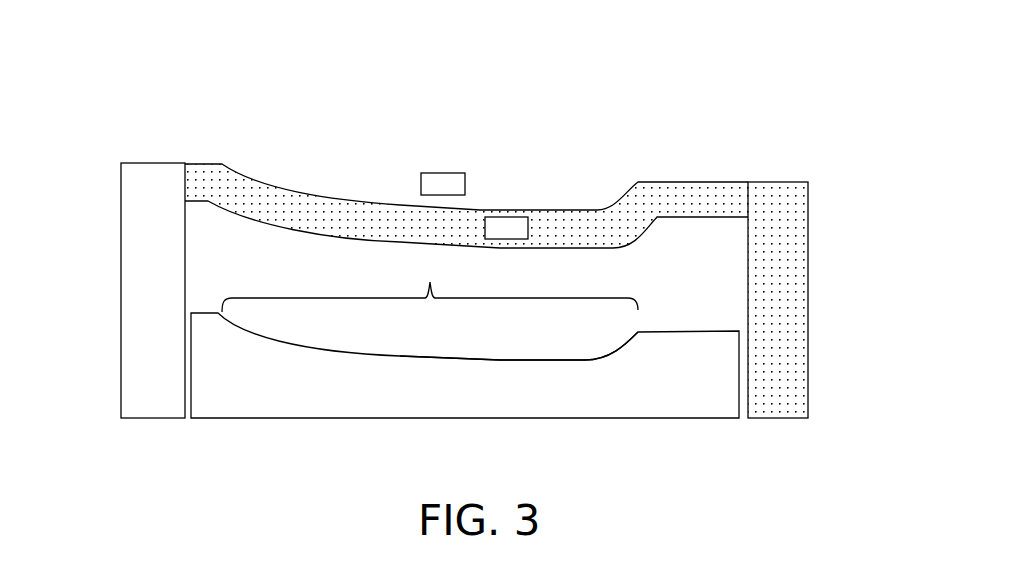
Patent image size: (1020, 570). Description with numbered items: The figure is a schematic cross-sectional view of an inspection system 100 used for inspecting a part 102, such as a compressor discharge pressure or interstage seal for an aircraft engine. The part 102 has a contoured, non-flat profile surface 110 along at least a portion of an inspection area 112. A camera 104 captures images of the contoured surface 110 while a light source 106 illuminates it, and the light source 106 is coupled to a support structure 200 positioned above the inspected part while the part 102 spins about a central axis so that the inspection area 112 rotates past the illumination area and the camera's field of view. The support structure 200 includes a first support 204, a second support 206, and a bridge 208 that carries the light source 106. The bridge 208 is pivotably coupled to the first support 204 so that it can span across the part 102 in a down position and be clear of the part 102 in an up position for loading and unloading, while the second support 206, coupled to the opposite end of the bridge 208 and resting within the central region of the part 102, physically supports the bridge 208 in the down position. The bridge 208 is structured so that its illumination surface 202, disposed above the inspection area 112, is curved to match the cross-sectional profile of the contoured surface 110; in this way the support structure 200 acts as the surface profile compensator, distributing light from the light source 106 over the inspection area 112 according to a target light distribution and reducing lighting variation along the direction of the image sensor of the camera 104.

The inspection system 100 is at (124, 61).
The part 102 is at (653, 418).
The camera 104 is at (444, 173).
The light source 106 is at (507, 216).
The contoured surface 110 is at (514, 359).
The inspection area 112 is at (430, 281).
The support structure 200 is at (466, 195).
The illumination surface 202 is at (289, 229).
The first support 204 is at (810, 286).
The second support 206 is at (121, 271).
The bridge 208 is at (289, 192).